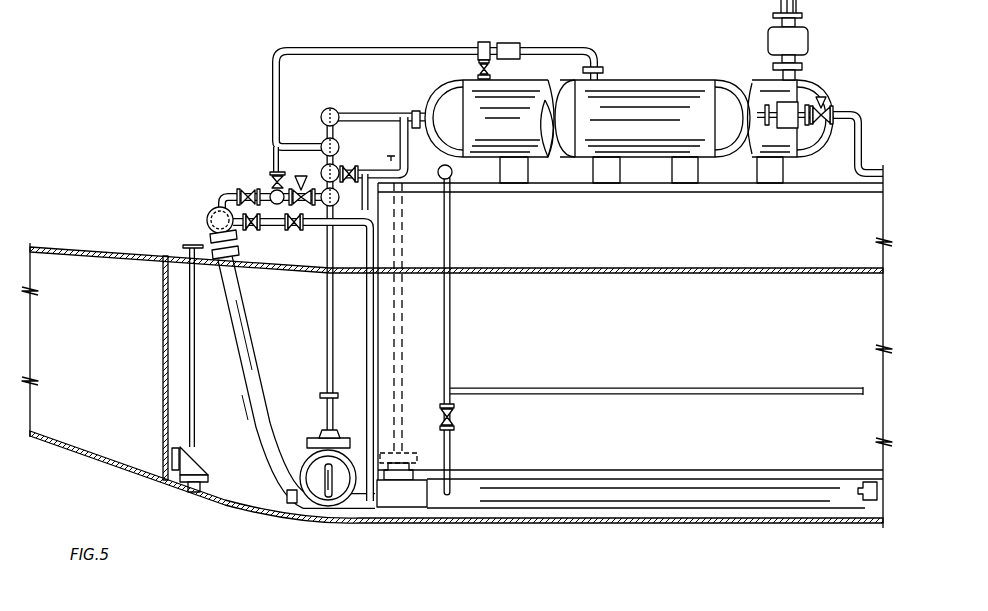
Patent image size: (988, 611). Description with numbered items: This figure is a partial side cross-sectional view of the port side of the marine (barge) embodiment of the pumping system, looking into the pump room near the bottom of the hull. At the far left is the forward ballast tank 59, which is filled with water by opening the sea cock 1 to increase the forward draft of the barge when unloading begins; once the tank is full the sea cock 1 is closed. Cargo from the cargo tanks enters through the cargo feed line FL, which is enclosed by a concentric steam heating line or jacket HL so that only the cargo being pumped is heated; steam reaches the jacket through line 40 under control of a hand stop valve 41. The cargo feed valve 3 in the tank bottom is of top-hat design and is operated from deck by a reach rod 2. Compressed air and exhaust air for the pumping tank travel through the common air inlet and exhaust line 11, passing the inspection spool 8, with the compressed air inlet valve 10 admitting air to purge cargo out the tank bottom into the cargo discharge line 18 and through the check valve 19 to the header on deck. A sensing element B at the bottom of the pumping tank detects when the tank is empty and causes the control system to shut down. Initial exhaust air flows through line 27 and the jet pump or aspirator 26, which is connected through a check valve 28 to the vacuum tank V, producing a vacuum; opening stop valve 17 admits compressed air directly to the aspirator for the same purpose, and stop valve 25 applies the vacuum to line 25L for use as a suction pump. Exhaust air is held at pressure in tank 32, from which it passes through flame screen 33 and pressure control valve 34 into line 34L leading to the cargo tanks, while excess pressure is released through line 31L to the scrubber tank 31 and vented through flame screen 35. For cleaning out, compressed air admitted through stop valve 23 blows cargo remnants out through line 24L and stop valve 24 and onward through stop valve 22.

The sea cock 1 is at (203, 466).
The reach rod 2 is at (403, 370).
The cargo feed valve 3 is at (405, 452).
The inspection spool 8 is at (325, 410).
The compressed air inlet valve 10 is at (297, 191).
The common air inlet and exhaust line 11 is at (326, 330).
The stop valve 17 is at (275, 182).
The cargo discharge line 18 is at (254, 420).
The check valve 19 is at (210, 237).
The stop valve 22 is at (250, 229).
The stop valve 23 is at (240, 193).
The stop valve 24 is at (293, 229).
The line 24L is at (375, 304).
The stop valve 25 is at (347, 170).
The line 25L is at (370, 200).
The jet pump or aspirator 26 is at (486, 44).
The line 27 is at (284, 57).
The check valve 28 is at (479, 70).
The scrubber tank 31 is at (814, 90).
The line 31L is at (356, 121).
The tank 32 is at (630, 80).
The flame screen 33 is at (783, 103).
The pressure control valve 34 is at (830, 112).
The line 34L is at (852, 150).
The flame screen 35 is at (808, 42).
The steam line 40 is at (627, 388).
The hand stop valve 41 is at (456, 414).
The forward ballast tank 59 is at (100, 354).
The sensing element B is at (290, 512).
The vacuum tank V is at (432, 92).
The steam heating line or jacket HL is at (622, 478).
The cargo feed line FL is at (872, 480).